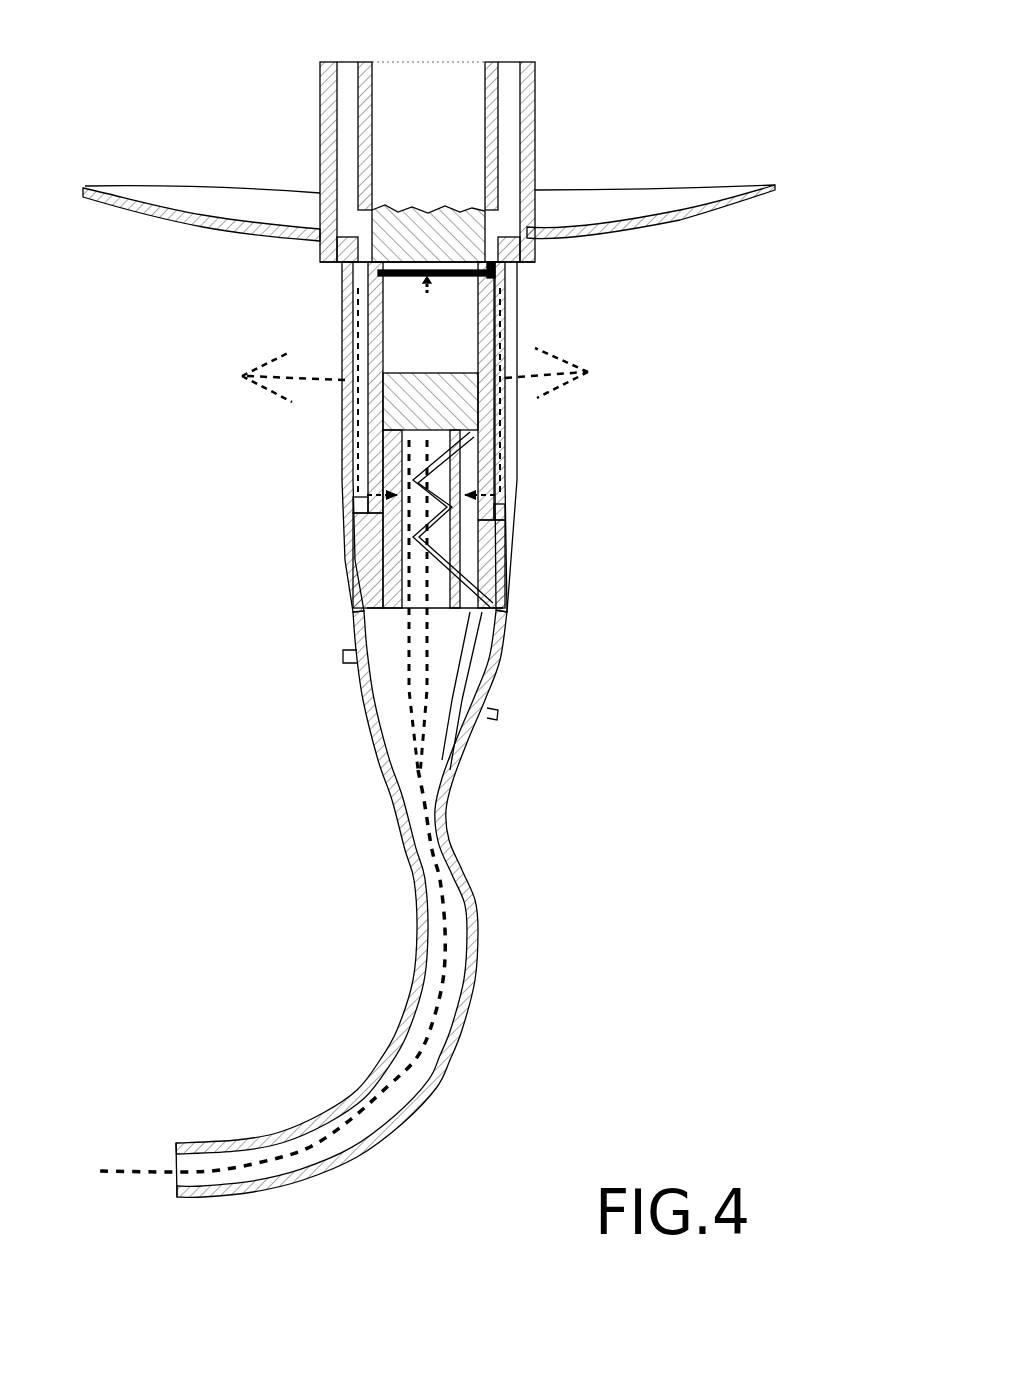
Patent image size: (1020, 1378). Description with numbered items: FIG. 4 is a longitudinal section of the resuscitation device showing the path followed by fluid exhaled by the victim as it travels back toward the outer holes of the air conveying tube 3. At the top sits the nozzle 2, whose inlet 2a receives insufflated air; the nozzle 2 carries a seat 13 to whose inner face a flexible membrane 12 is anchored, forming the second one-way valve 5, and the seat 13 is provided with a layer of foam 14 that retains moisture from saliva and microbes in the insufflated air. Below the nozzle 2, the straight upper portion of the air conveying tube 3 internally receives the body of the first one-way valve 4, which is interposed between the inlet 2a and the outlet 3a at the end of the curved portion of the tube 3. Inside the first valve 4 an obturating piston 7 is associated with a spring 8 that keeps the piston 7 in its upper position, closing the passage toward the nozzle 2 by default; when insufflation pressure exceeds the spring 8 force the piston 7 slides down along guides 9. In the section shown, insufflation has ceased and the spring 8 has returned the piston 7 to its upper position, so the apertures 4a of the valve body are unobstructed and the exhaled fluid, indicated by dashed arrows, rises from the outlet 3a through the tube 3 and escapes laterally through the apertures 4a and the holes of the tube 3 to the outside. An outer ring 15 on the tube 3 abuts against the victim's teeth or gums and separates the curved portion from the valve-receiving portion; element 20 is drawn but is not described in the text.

The nozzle 2 is at (487, 155).
The inlet 2a is at (425, 62).
The air conveying tube 3 is at (370, 997).
The outlet 3a is at (176, 1142).
The first one-way valve 4 is at (503, 332).
The apertures 4a is at (365, 511).
The second one-way valve 5 is at (402, 290).
The obturating piston 7 is at (420, 398).
The spring 8 is at (430, 462).
The guides 9 is at (395, 565).
The membrane 12 is at (495, 278).
The seat 13 is at (380, 273).
The layer of foam 14 is at (440, 240).
The outer ring 15 is at (347, 660).
The flange 20 is at (205, 225).